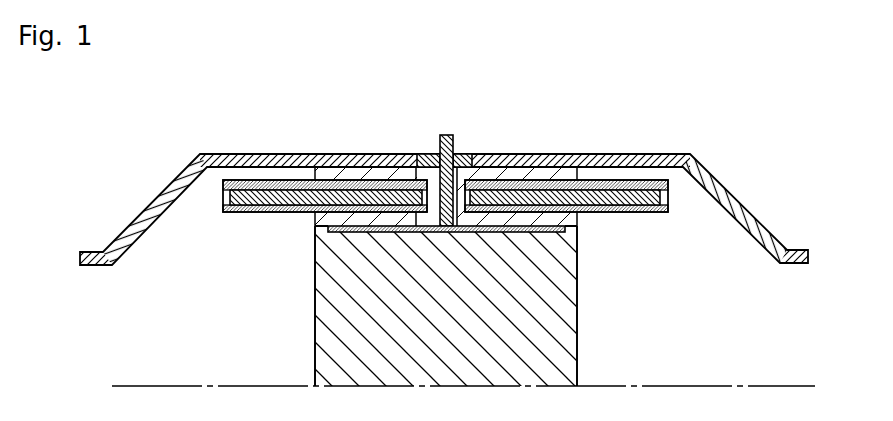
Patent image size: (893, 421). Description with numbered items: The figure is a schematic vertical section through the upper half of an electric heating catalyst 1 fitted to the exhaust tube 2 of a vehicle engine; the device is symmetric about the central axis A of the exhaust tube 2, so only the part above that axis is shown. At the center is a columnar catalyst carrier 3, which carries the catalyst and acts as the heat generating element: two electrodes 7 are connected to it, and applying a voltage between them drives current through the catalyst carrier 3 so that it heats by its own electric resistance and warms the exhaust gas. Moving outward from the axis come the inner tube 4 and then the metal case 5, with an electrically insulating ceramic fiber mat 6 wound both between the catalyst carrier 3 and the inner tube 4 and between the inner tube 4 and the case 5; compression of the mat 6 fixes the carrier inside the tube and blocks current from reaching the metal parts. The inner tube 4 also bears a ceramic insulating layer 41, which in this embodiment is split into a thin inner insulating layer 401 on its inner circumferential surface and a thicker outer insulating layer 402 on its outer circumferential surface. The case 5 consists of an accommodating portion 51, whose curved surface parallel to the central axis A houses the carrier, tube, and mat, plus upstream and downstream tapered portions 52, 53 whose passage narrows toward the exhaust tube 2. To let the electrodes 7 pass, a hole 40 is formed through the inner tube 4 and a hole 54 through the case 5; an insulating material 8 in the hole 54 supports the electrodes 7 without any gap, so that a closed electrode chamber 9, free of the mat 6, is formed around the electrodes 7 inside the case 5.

The electric heating catalyst 1 is at (672, 88).
The exhaust tube 2 is at (88, 250).
The catalyst carrier 3 is at (578, 285).
The inner tube 4 is at (280, 180).
The case 5 is at (527, 155).
The mat 6 is at (569, 155).
The electrodes 7 is at (448, 133).
The insulating material 8 is at (466, 154).
The electrode chamber 9 is at (416, 155).
The hole 40 is at (468, 181).
The insulating layer 41 is at (224, 198).
The accommodating portion 51 is at (615, 155).
The tapered portion 52 is at (153, 202).
The tapered portion 53 is at (738, 200).
The hole 54 is at (433, 155).
The inner insulating layer 401 is at (278, 213).
The outer insulating layer 402 is at (235, 176).
The central axis A is at (712, 386).